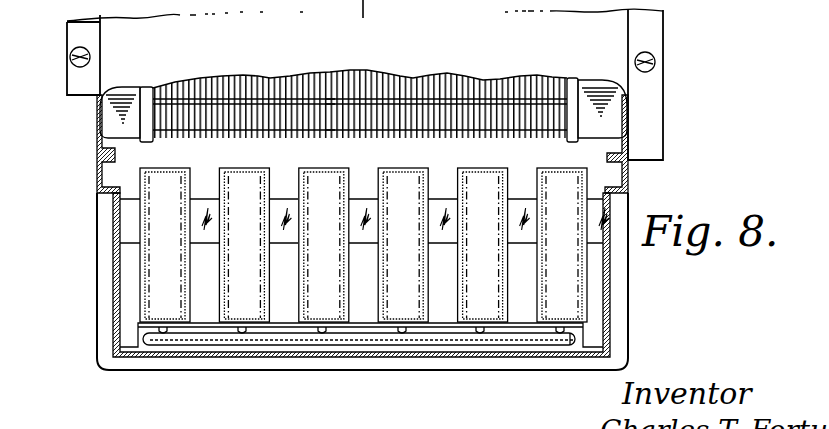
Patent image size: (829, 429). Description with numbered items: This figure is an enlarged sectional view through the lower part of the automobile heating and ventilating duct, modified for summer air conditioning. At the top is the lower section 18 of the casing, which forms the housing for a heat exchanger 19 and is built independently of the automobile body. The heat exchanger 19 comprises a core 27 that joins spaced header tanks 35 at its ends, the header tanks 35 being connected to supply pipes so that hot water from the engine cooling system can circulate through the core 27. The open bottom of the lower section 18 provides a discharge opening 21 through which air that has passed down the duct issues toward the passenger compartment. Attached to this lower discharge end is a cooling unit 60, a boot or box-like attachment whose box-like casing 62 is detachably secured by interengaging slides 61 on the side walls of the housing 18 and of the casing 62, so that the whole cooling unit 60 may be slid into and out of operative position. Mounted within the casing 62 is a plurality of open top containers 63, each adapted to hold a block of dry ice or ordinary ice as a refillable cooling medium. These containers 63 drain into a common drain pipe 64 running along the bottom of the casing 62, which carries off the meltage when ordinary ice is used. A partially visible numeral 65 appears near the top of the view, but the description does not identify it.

The lower section 18 is at (210, 53).
The heat exchanger 19 is at (336, 89).
The header tank 35 is at (112, 117).
The core 27 is at (328, 139).
The interengaging slide 61 is at (97, 145).
The box-like casing 62 is at (113, 274).
The cooling unit 60 is at (115, 377).
The open top container 63 is at (188, 168).
The discharge opening 21 is at (515, 150).
The drain pipe 64 is at (282, 338).
The upper member 65 is at (415, 9).